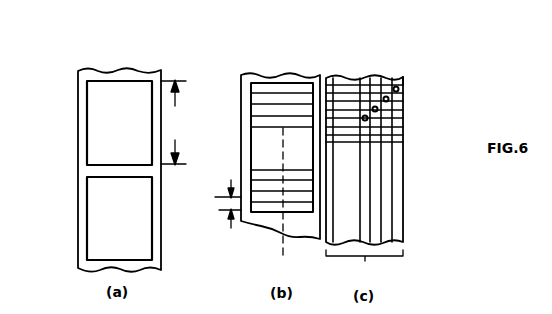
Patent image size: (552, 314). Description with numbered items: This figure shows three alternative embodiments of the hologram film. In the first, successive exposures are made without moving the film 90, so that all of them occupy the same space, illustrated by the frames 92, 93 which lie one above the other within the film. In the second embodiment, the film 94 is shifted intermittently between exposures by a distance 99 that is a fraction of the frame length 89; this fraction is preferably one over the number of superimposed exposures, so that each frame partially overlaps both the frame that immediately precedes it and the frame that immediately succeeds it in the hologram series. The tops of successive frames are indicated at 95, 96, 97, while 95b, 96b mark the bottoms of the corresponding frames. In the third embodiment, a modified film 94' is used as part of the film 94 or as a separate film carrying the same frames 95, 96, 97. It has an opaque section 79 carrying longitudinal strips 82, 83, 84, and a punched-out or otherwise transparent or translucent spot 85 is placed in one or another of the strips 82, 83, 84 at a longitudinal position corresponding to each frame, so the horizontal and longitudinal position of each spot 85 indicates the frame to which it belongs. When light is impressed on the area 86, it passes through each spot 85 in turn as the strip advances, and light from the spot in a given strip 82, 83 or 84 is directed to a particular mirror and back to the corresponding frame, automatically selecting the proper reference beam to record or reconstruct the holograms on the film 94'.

The film 90 is at (93, 72).
The frame 92 is at (87, 119).
The frame 93 is at (87, 217).
The frame length 89 is at (173, 122).
The film 94 is at (280, 129).
The top of frame 95 is at (250, 87).
The top of frame 96 is at (250, 98).
The top of frame 97 is at (250, 112).
The bottom of frame 95b is at (250, 170).
The bottom of frame 96b is at (250, 182).
The distance 99 is at (224, 207).
The opaque section 79 is at (364, 180).
The area 86 is at (344, 83).
The modified film 94' is at (444, 72).
The spot 85 is at (403, 89).
The longitudinal strip 82 is at (398, 162).
The longitudinal strip 83 is at (385, 177).
The longitudinal strip 84 is at (375, 188).